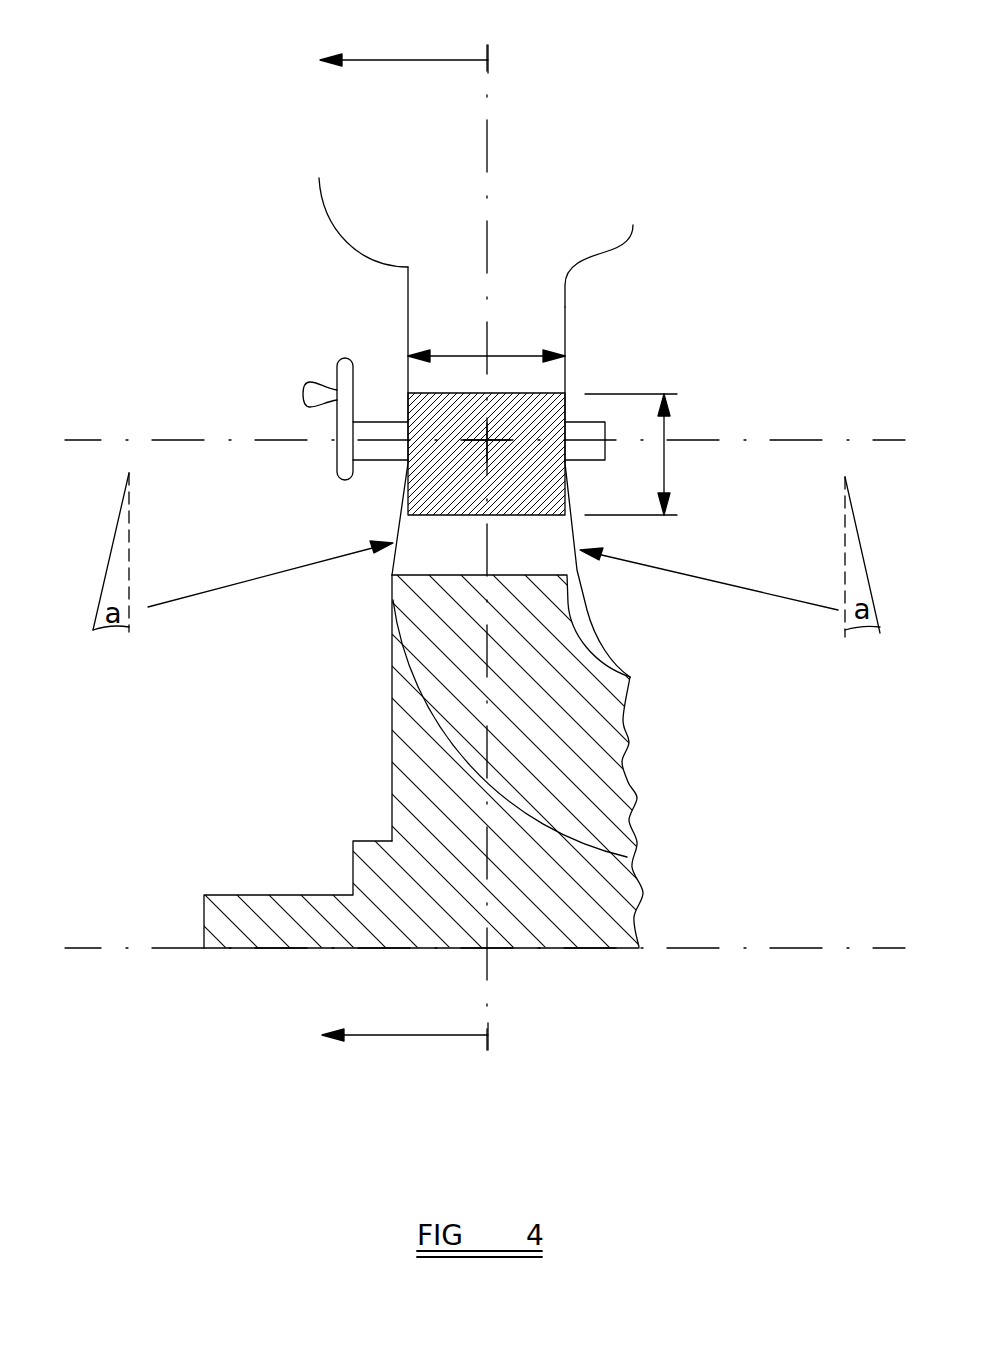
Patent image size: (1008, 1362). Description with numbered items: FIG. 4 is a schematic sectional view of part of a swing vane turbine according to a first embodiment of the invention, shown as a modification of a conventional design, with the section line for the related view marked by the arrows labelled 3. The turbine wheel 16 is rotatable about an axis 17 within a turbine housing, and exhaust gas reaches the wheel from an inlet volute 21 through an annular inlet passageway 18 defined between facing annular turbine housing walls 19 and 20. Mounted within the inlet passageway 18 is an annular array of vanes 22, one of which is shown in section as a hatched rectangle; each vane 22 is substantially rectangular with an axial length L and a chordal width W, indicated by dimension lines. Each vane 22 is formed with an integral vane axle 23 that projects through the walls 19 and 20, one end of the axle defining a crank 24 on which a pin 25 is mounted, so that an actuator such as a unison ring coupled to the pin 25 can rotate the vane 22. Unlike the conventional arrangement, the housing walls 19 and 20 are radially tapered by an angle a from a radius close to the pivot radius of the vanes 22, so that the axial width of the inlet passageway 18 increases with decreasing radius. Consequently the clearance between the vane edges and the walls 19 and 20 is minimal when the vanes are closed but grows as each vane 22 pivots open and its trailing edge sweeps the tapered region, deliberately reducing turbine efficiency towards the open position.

The section line 3- 3 is at (392, 548).
The turbine wheel 16 is at (543, 704).
The axis 17 is at (272, 949).
The annular inlet passageway 18 is at (538, 268).
The annular turbine housing wall 19 is at (407, 278).
The annular turbine housing wall 20 is at (565, 307).
The inlet volute 21 is at (524, 165).
The vane 22 is at (530, 404).
The vane axle 23 is at (597, 425).
The crank 24 is at (345, 357).
The pin 25 is at (300, 394).